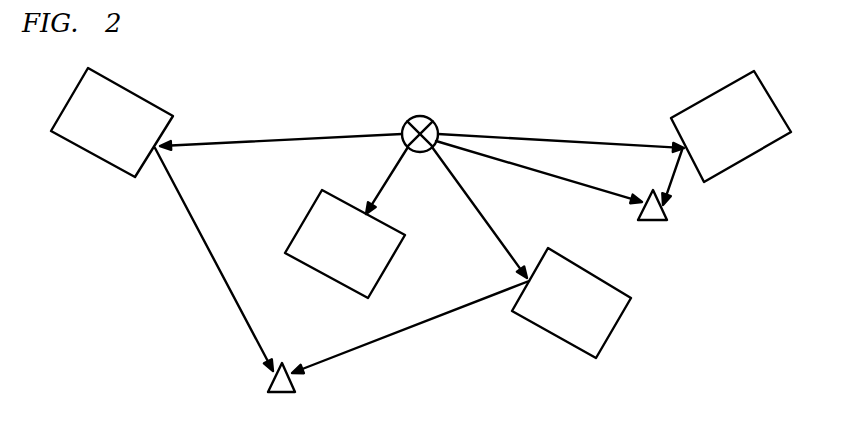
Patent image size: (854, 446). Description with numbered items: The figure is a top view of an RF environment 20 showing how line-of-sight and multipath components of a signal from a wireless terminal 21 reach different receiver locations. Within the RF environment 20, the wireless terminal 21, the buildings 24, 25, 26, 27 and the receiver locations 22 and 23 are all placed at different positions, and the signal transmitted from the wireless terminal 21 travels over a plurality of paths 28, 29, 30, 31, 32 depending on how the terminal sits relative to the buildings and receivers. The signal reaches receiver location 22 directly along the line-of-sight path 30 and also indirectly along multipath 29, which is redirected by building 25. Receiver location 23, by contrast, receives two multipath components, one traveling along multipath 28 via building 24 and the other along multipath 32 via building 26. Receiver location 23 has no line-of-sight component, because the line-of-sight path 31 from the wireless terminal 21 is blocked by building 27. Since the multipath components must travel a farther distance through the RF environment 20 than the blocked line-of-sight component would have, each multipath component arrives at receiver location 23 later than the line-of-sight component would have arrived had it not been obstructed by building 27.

The RF environment 20 is at (423, 50).
The wireless terminal 21 is at (433, 118).
The receiver location 22 is at (667, 221).
The receiver location 23 is at (266, 392).
The building 24 is at (145, 100).
The building 25 is at (787, 123).
The building 26 is at (569, 260).
The building 27 is at (403, 232).
The multipath 28 is at (262, 143).
The multipath 29 is at (597, 143).
The line-of-sight path 30 is at (568, 178).
The line-of-sight path 31 is at (382, 182).
The multipath 32 is at (489, 222).